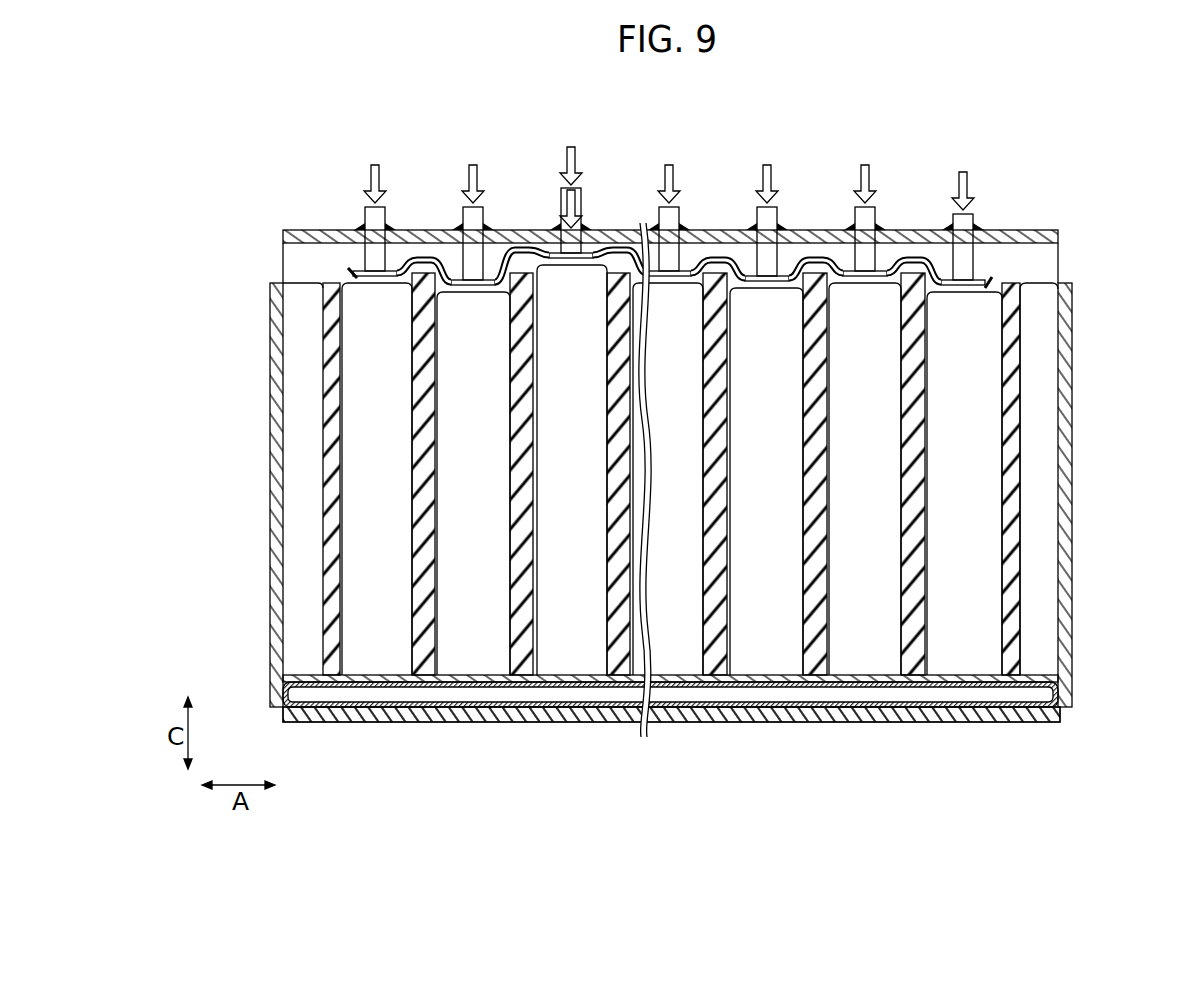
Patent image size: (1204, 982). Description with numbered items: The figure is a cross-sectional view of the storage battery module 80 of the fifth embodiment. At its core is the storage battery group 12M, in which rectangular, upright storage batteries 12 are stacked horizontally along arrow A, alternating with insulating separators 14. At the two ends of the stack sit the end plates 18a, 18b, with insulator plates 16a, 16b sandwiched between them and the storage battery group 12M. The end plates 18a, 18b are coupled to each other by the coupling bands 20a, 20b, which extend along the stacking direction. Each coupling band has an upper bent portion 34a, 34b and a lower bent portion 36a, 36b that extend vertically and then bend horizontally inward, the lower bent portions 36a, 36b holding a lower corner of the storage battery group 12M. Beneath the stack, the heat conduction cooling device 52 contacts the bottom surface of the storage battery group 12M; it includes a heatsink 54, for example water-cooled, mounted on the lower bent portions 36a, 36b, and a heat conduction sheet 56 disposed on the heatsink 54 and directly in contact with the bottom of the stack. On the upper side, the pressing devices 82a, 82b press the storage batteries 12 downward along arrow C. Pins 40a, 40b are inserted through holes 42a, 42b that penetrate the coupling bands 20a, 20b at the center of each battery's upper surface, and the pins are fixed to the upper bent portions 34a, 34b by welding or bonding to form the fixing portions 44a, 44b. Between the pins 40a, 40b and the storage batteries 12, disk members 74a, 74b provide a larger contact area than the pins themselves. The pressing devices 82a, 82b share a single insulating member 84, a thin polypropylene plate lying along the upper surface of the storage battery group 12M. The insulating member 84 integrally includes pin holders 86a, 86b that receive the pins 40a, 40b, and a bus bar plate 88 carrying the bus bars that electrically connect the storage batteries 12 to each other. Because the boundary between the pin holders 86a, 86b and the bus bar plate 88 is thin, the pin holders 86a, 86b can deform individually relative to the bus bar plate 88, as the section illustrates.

The storage battery module 80 is at (608, 98).
The storage battery 12 is at (587, 768).
The storage battery group 12M is at (672, 537).
The insulating separator 14 is at (437, 525).
The insulator plate 16a is at (1018, 598).
The insulator plate 16b is at (328, 598).
The end plate 18a is at (1040, 568).
The end plate 18b is at (300, 568).
The coupling band 20a is at (461, 223).
The coupling band 20b is at (326, 228).
The upper bent portion 34a is at (850, 224).
The upper bent portion 34b is at (812, 233).
The lower bent portion 36a is at (671, 739).
The lower bent portion 36b is at (763, 715).
The pin 40a is at (728, 234).
The pin 40b is at (972, 218).
The hole 42a is at (753, 251).
The hole 42b is at (950, 237).
The fixing portion 44a is at (531, 187).
The fixing portion 44b is at (556, 228).
The heat conduction cooling device 52 is at (1074, 719).
The heatsink 54 is at (982, 708).
The heat conduction sheet 56 is at (993, 681).
The disk member 74a is at (761, 296).
The disk member 74b is at (968, 287).
The pressing device 82a is at (713, 176).
The pressing device 82b is at (982, 203).
The insulating member 84 is at (712, 257).
The pin holder 86a is at (916, 223).
The pin holder 86b is at (950, 278).
The bus bar plate 88 is at (833, 274).